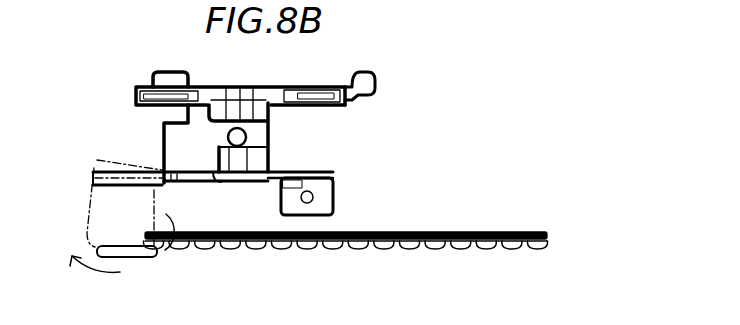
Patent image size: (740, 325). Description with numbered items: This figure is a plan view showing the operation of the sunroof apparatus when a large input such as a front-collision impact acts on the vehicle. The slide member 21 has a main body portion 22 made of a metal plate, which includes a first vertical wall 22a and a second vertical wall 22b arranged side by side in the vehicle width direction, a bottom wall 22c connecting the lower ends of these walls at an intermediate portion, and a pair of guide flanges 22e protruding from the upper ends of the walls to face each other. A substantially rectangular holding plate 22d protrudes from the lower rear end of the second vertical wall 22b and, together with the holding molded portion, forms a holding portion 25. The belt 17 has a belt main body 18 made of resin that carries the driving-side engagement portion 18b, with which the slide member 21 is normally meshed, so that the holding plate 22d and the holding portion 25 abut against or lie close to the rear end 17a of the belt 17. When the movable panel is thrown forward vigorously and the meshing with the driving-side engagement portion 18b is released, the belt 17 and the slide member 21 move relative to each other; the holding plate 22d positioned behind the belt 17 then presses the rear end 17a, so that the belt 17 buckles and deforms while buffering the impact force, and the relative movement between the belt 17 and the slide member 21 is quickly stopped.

The main body portion 22 is at (271, 165).
The slide member 21 is at (271, 165).
The first vertical wall 22a is at (347, 84).
The second vertical wall 22b is at (334, 186).
The bottom wall 22c is at (258, 133).
The holding plate 22d is at (162, 210).
The guide flanges 22e is at (272, 168).
The holding portion 25 is at (214, 251).
The belt main body 18 is at (349, 240).
The belt 17 is at (311, 232).
The driving-side engagement portion 18b is at (235, 246).
The rear end 17a is at (134, 240).